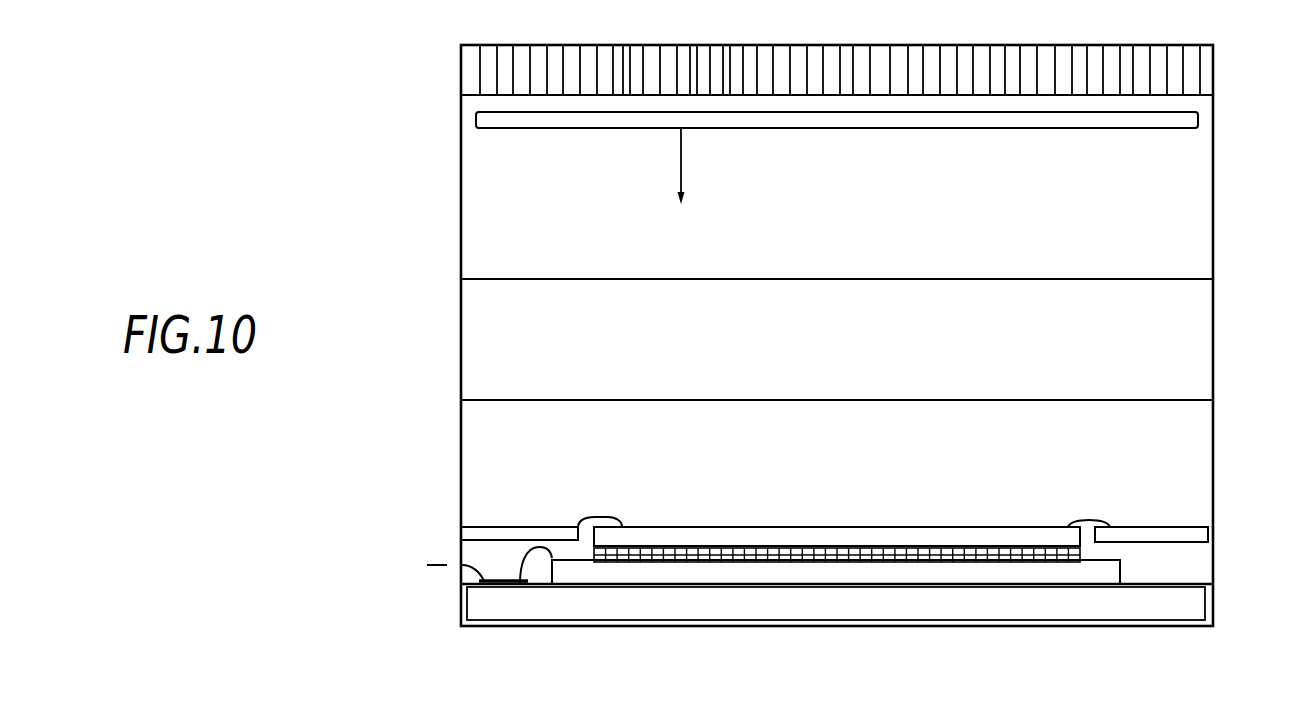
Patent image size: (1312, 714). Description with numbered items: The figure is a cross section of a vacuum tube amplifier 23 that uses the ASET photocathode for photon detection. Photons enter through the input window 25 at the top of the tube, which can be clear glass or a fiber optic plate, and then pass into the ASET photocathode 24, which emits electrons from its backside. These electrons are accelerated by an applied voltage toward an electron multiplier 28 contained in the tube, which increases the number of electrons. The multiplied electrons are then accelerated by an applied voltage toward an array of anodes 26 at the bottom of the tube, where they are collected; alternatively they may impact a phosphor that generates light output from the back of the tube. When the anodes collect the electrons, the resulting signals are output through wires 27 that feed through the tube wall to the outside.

The vacuum tube amplifier 23 is at (460, 237).
The ASET photocathode 24 is at (1198, 118).
The input window 25 is at (1187, 75).
The array of anodes 26 is at (852, 530).
The wires 27 is at (528, 560).
The electron multiplier 28 is at (1204, 333).